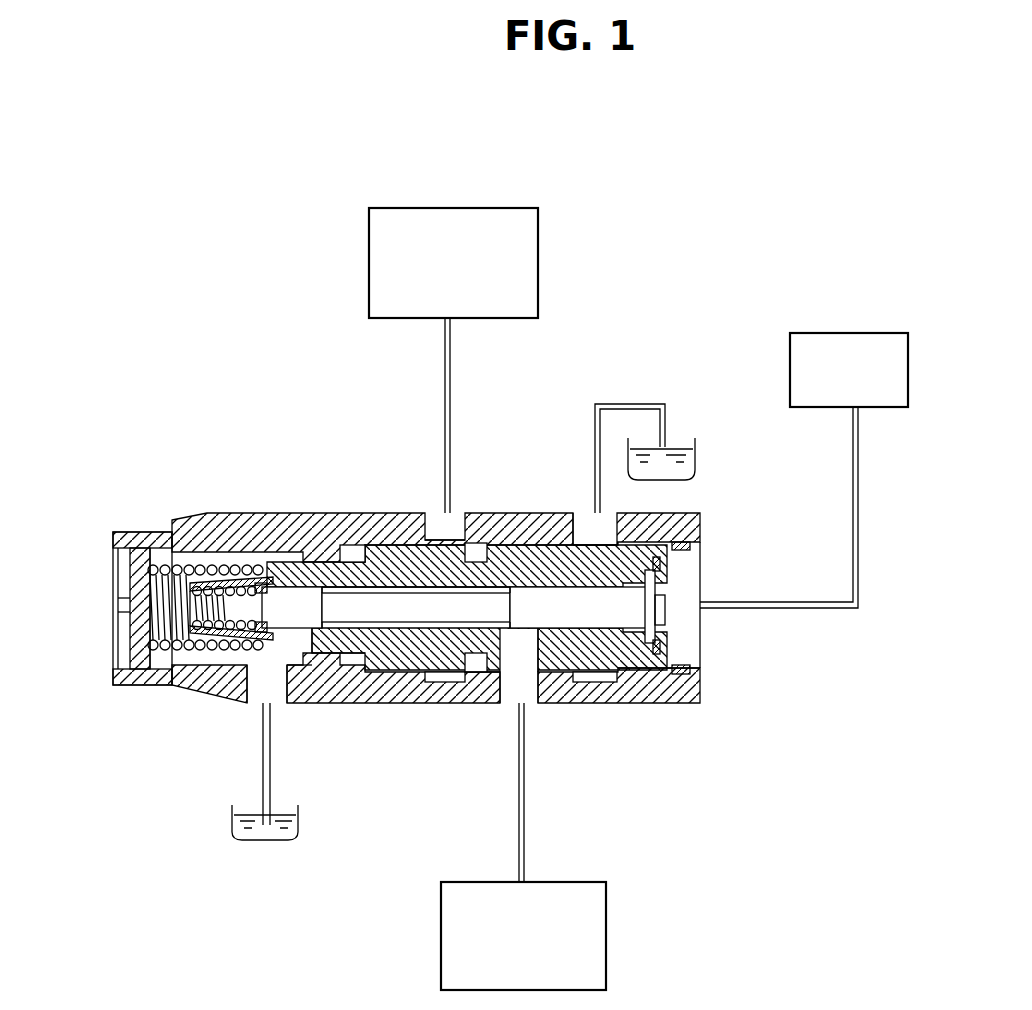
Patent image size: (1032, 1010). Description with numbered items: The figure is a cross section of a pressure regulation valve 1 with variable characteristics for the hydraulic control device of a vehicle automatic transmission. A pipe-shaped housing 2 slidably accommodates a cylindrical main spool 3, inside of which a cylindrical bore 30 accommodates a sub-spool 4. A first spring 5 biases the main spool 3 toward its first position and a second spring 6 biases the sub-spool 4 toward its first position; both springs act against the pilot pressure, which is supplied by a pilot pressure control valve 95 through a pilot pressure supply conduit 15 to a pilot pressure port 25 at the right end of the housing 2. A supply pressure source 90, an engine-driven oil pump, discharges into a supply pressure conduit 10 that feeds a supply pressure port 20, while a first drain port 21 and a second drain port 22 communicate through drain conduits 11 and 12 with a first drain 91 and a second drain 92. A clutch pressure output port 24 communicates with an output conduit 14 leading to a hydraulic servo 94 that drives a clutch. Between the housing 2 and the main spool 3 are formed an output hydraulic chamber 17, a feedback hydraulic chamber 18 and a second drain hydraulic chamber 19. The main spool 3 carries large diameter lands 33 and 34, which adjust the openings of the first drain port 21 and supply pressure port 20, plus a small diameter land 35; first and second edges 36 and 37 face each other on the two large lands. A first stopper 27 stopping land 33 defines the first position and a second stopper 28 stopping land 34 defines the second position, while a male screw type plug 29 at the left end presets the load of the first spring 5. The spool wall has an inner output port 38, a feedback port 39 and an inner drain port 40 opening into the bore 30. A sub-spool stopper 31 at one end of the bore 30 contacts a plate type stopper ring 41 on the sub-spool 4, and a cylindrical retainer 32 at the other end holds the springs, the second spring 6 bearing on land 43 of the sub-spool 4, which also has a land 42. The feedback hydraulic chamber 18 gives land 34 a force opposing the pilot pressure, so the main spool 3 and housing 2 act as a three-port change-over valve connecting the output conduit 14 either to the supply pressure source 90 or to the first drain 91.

The pressure regulation valve 1 is at (117, 512).
The housing 2 is at (225, 514).
The main spool 3 is at (522, 585).
The sub-spool 4 is at (390, 600).
The first spring 5 is at (198, 585).
The second spring 6 is at (202, 652).
The supply pressure conduit 10 is at (452, 344).
The drain conduit 11 is at (618, 402).
The drain conduit 12 is at (272, 785).
The output conduit 14 is at (519, 828).
The pilot pressure supply conduit 15 is at (858, 503).
The output hydraulic chamber 17 is at (486, 655).
The feedback hydraulic chamber 18 is at (393, 655).
The second drain hydraulic chamber 19 is at (235, 655).
The supply pressure port 20 is at (437, 524).
The first drain port 21 is at (598, 518).
The second drain port 22 is at (262, 690).
The clutch pressure output port 24 is at (528, 700).
The pilot pressure port 25 is at (692, 550).
The first stopper 27 is at (692, 672).
The second stopper 28 is at (350, 552).
The plug 29 is at (160, 545).
The cylindrical bore 30 is at (415, 612).
The sub-spool stopper 31 is at (662, 640).
The retainer 32 is at (175, 657).
The large diameter land 33 is at (620, 672).
The large diameter land 34 is at (468, 655).
The small diameter land 35 is at (336, 660).
The first edge 36 is at (565, 540).
The second edge 37 is at (494, 552).
The inner output port 38 is at (548, 660).
The feedback port 39 is at (380, 668).
The inner drain port 40 is at (300, 655).
The stopper ring 41 is at (662, 598).
The land 42 is at (583, 615).
The land 43 is at (288, 592).
The supply pressure source 90 is at (478, 208).
The first drain 91 is at (696, 455).
The second drain 92 is at (260, 842).
The hydraulic servo 94 is at (441, 935).
The pilot pressure control valve 95 is at (847, 333).